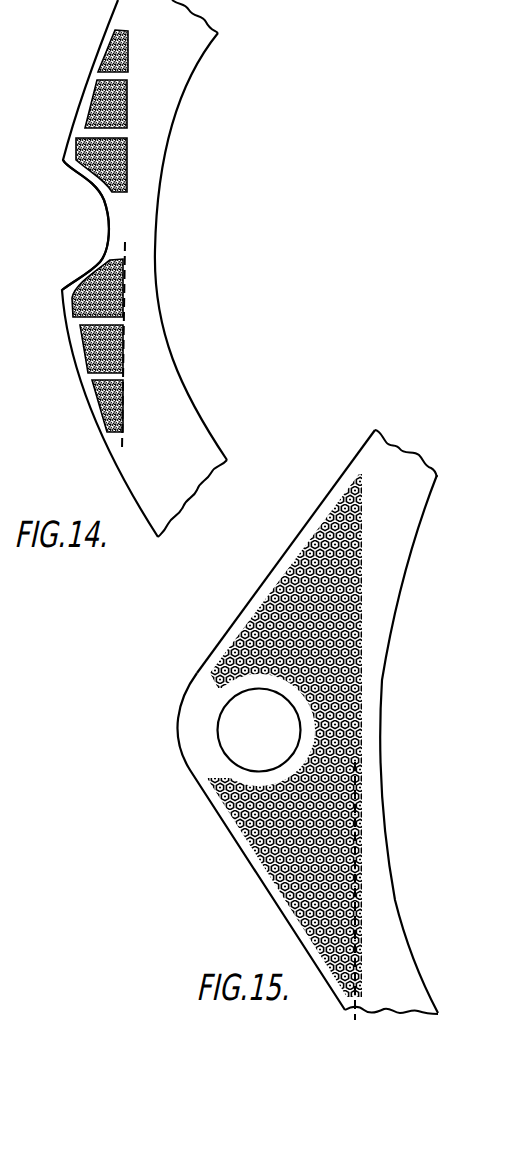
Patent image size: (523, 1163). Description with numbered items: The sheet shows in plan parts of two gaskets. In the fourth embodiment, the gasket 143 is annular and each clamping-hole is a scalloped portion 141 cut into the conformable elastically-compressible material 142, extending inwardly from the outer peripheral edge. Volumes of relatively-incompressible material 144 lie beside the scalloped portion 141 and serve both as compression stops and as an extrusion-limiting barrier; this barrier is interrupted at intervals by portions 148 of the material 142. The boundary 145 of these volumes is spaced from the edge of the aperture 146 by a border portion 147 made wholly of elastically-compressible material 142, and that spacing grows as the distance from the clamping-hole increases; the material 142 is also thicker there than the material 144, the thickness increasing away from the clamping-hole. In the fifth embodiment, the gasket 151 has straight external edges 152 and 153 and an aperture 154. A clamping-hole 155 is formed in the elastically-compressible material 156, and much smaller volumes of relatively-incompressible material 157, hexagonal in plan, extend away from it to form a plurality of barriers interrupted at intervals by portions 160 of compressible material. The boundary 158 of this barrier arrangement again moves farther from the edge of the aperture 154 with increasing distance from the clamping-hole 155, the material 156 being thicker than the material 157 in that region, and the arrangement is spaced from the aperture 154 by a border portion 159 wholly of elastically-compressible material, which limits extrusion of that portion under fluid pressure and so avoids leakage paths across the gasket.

In FIG. 14, the scalloped portion 141 is at (95, 207).
In FIG. 14, the conformable elastically-compressible material 142 is at (160, 128).
In FIG. 14, the gasket 143 is at (138, 213).
In FIG. 14, the volumes of relatively-incompressible material 144 is at (127, 287).
In FIG. 14, the boundary of the volumes 145 is at (125, 358).
In FIG. 14, the aperture 146 is at (193, 400).
In FIG. 14, the border portion 147 is at (150, 318).
In FIG. 14, the portions of elastically-compressible material 148 is at (90, 377).
In FIG. 15, the gasket 151 is at (390, 630).
In FIG. 15, the straight external edge 152 is at (275, 569).
In FIG. 15, the straight external edge 153 is at (242, 853).
In FIG. 15, the aperture 154 is at (380, 790).
In FIG. 15, the clamping-hole 155 is at (276, 738).
In FIG. 15, the elastically-compressible material 156 is at (383, 572).
In FIG. 15, the volumes of relatively-incompressible material 157 is at (342, 748).
In FIG. 15, the boundary 158 is at (355, 873).
In FIG. 15, the border portion 159 is at (373, 823).
In FIG. 15, the portions of elastically-compressible material 160 is at (350, 863).